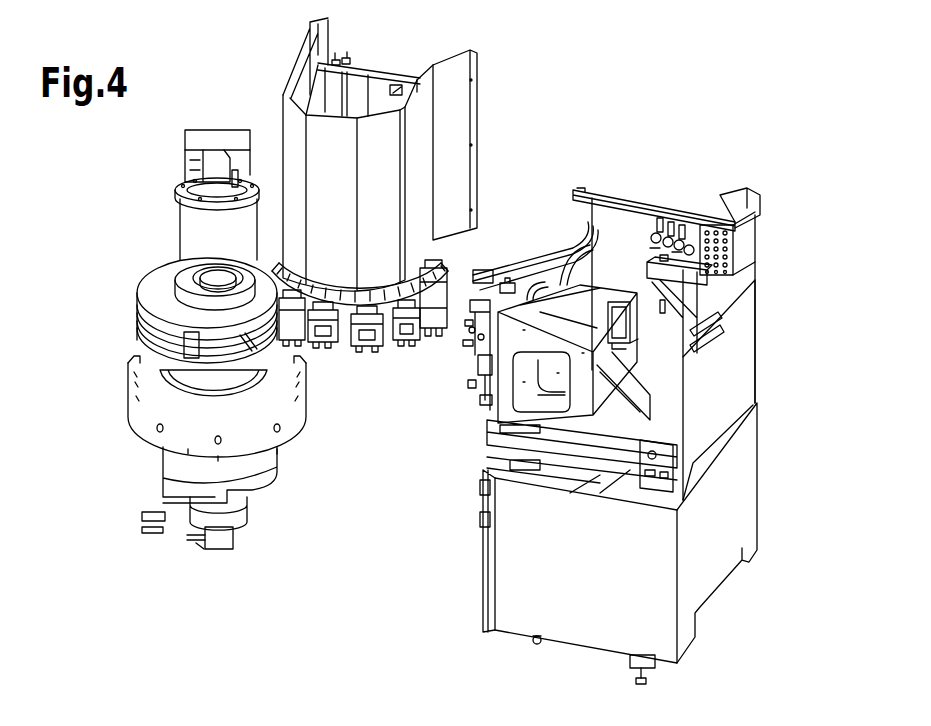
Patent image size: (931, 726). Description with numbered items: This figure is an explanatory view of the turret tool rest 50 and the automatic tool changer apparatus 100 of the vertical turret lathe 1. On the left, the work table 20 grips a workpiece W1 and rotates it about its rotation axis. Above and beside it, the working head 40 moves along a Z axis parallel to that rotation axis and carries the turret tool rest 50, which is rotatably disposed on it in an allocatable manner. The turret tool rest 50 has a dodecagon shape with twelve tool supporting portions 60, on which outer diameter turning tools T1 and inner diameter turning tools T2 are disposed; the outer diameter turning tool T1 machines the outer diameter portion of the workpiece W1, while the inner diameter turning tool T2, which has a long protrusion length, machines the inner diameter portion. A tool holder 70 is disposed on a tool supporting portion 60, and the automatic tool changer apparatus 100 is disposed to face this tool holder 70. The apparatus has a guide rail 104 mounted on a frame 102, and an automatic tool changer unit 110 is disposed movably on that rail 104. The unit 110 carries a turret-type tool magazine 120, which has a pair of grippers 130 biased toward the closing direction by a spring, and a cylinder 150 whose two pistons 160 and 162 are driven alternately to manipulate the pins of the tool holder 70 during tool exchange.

The vertical turret lathe 1 is at (583, 77).
The work table 20 is at (143, 347).
The workpiece W1 is at (148, 289).
The working head 40 is at (423, 144).
The tool holder 70 is at (462, 262).
The turret tool rest 50 is at (387, 305).
The tool supporting portion 60 is at (322, 343).
The outer diameter turning tool T1 is at (360, 347).
The inner diameter turning tool T2 is at (434, 330).
The automatic tool changer apparatus 100 is at (695, 146).
The frame 102 is at (517, 592).
The guide rail 104 is at (600, 452).
The automatic tool changer unit 110 is at (488, 425).
The tool magazine 120 is at (492, 392).
The gripper 130 is at (483, 368).
The cylinder 150 is at (493, 288).
The piston 160 is at (480, 300).
The piston 162 is at (493, 283).